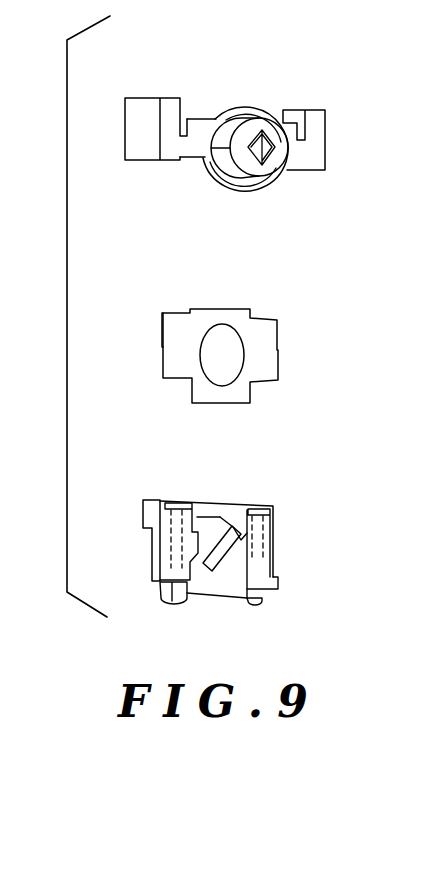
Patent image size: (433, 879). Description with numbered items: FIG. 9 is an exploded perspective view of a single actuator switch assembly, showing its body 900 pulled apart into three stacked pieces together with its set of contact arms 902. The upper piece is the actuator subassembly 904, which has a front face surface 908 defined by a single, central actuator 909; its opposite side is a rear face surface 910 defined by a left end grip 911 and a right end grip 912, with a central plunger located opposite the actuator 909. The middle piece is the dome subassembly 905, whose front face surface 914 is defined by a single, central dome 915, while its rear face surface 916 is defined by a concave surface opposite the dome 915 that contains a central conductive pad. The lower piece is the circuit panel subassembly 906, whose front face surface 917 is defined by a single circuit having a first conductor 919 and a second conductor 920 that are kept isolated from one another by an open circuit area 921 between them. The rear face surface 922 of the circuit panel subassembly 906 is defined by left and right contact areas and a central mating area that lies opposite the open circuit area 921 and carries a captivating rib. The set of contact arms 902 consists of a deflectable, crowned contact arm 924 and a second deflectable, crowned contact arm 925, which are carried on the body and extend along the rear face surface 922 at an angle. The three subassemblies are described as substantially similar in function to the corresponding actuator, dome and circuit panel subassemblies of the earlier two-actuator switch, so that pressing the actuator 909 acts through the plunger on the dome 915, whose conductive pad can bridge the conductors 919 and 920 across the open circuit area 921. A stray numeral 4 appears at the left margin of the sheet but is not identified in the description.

The partial numeral (cut off at sheet edge) 4 is at (7, 157).
The body 900 is at (67, 317).
The set of contact arms 902 is at (231, 617).
The actuator subassembly 904 is at (279, 142).
The dome subassembly 905 is at (252, 362).
The circuit panel subassembly 906 is at (226, 563).
The front face surface 908 is at (183, 153).
The central actuator 909 is at (273, 168).
The rear face surface 910 is at (217, 108).
The left end grip 911 is at (317, 123).
The right end grip 912 is at (167, 104).
The front face surface 914 is at (268, 377).
The central dome 915 is at (222, 335).
The rear face surface 916 is at (168, 313).
The front face surface 917 is at (238, 515).
The conductor 919 is at (197, 522).
The conductor 920 is at (257, 565).
The open circuit area 921 is at (220, 540).
The rear face surface 922 is at (152, 528).
The contact arm 924 is at (262, 598).
The contact arm 925 is at (172, 600).